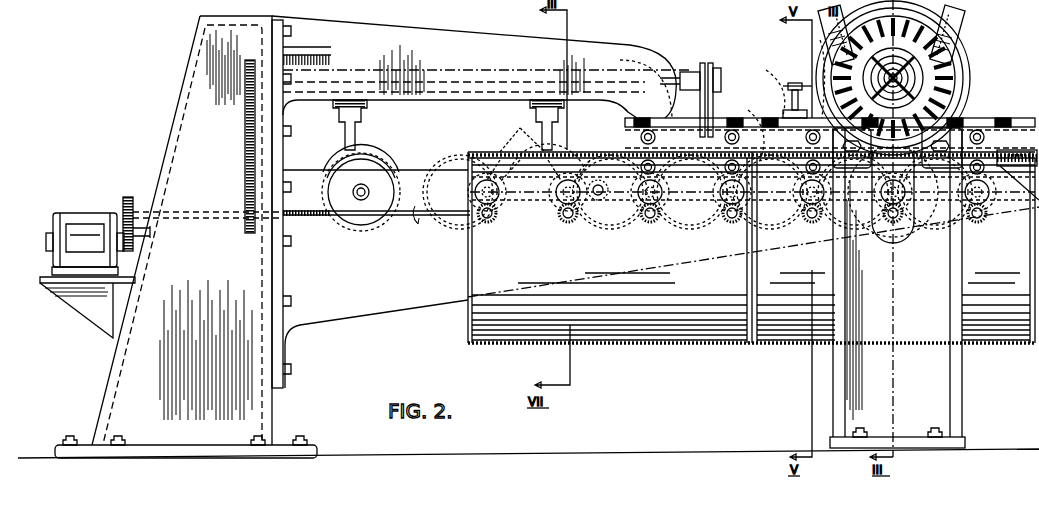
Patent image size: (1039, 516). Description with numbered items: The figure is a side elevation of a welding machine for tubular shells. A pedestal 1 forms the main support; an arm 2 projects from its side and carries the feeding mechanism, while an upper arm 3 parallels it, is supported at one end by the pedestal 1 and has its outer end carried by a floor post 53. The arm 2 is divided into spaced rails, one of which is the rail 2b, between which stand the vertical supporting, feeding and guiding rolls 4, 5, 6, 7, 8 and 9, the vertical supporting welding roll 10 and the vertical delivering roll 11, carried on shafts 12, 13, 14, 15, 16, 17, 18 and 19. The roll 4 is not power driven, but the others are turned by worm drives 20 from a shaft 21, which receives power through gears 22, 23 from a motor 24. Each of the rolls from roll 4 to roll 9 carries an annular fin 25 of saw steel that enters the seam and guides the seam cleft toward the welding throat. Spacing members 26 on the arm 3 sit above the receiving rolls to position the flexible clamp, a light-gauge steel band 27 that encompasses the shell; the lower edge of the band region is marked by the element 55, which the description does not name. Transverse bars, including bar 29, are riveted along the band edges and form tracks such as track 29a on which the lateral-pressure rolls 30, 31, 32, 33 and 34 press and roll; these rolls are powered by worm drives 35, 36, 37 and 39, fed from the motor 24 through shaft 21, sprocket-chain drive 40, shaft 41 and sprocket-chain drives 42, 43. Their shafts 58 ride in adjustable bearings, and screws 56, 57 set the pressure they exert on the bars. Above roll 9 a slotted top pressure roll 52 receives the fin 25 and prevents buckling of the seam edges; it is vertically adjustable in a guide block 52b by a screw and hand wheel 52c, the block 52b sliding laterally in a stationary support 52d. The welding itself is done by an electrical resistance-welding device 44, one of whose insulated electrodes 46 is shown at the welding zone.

The pedestal 1 is at (110, 375).
The arm 2 is at (366, 313).
The rail 2b is at (428, 306).
The arm 3 is at (385, 42).
The vertical supporting, feeding and guiding roll 4 is at (340, 165).
The vertical supporting, feeding and guiding roll 5 is at (466, 157).
The vertical supporting, feeding and guiding roll 6 is at (562, 212).
The vertical supporting, feeding and guiding roll 7 is at (650, 212).
The vertical supporting, feeding and guiding roll 8 is at (728, 212).
The vertical supporting, feeding and guiding roll 9 is at (808, 212).
The vertical supporting welding roll 10 is at (890, 212).
The vertical delivering roll 11 is at (977, 212).
The shaft 12 is at (358, 200).
The shaft 13 is at (456, 222).
The shaft 14 is at (500, 204).
The shaft 15 is at (612, 214).
The shaft 16 is at (690, 212).
The shaft 17 is at (771, 214).
The shaft 18 is at (862, 225).
The shaft 19 is at (940, 226).
The worm drive 20 is at (488, 224).
The shaft 21 is at (205, 219).
The gear 22 is at (128, 196).
The gear 23 is at (140, 244).
The motor 24 is at (95, 212).
The annular fin 25 is at (365, 160).
The spacing member 26 is at (344, 129).
The band 27 is at (540, 345).
The transverse bar 29 is at (625, 150).
The track 29a is at (512, 150).
The lateral-pressure roll 30 is at (632, 116).
The lateral-pressure roll 31 is at (738, 118).
The lateral-pressure roll 32 is at (770, 118).
The lateral-pressure roll 33 is at (965, 118).
The lateral-pressure roll 34 is at (1010, 150).
The worm drive 35 is at (672, 100).
The worm drive 36 is at (725, 118).
The worm drive 37 is at (836, 45).
The worm drive 39 is at (1025, 118).
The sprocket-chain drive 40 is at (245, 150).
The shaft 41 is at (468, 80).
The sprocket-chain drive 42 is at (703, 62).
The sprocket-chain drive 43 is at (718, 68).
The electrical resistance-welding device 44 is at (966, 84).
The electrode 46 is at (955, 52).
The top pressure roll 52 is at (752, 115).
The guide block 52b is at (768, 72).
The screw and hand wheel 52c is at (818, 44).
The stationary support 52d is at (792, 83).
The floor post 53 is at (833, 386).
The housing edge 55 is at (470, 340).
The screw 56 is at (660, 122).
The screw 57 is at (658, 137).
The shaft 58 is at (598, 202).